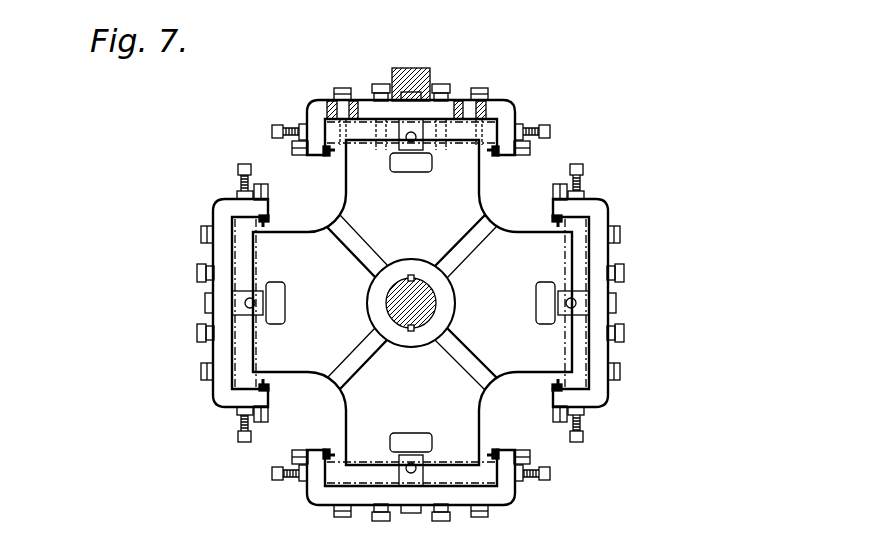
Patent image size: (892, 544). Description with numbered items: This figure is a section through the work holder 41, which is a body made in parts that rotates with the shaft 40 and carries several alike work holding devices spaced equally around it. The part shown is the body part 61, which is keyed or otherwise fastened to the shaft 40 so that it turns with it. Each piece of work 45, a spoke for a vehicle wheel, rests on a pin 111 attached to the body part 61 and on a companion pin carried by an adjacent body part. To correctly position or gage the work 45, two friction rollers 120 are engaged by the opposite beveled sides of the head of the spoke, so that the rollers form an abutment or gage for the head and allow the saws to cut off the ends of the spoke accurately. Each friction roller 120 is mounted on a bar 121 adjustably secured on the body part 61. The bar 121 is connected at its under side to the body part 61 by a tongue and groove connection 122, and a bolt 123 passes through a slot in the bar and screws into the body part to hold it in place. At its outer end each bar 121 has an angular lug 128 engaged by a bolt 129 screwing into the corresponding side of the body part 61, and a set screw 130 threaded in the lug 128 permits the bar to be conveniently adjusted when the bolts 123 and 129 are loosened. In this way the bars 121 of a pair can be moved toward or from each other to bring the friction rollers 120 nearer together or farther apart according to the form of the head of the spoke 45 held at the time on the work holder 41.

The shaft 40 is at (431, 306).
The work holder 41 is at (250, 64).
The work 45 is at (424, 72).
The body part 61 is at (302, 218).
The pin 111 is at (418, 163).
The friction roller 120 is at (380, 84).
The bar 121 is at (313, 107).
The tongue and groove connection 122 is at (373, 140).
The bolt 123 is at (339, 88).
The angular lug 128 is at (310, 118).
The bolt 129 is at (298, 152).
The set screw 130 is at (273, 131).